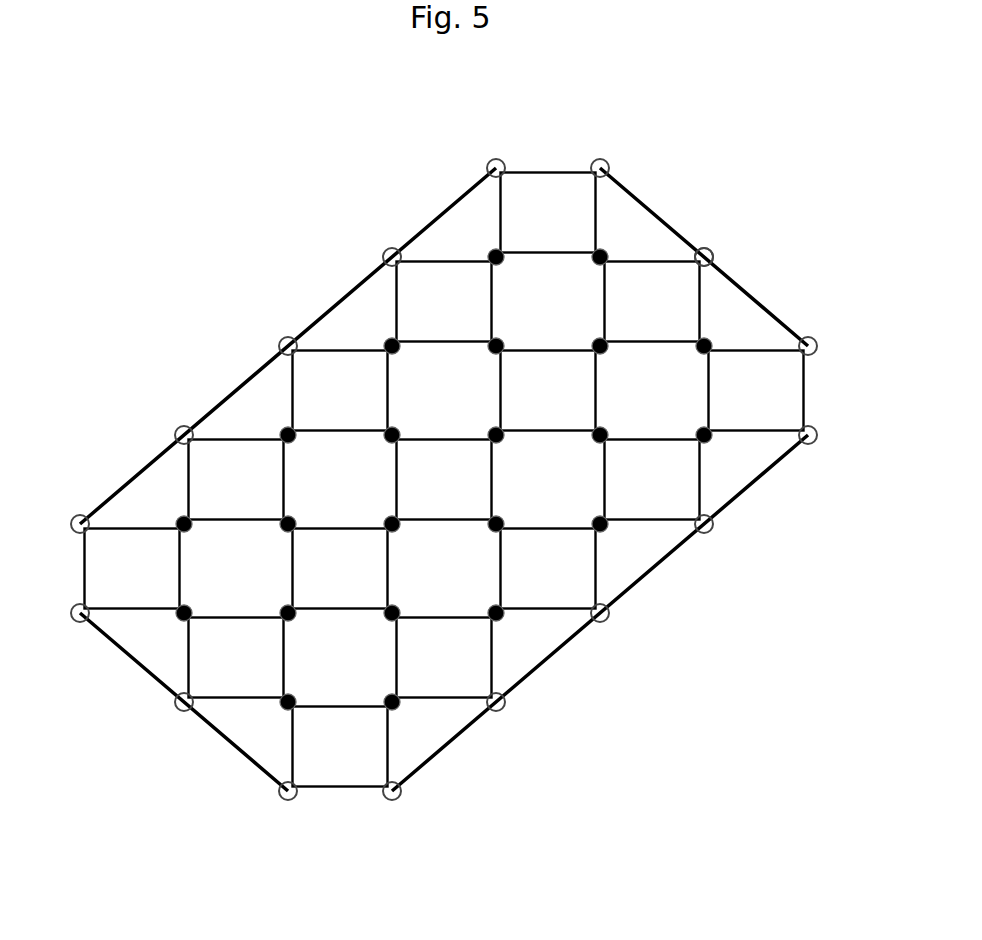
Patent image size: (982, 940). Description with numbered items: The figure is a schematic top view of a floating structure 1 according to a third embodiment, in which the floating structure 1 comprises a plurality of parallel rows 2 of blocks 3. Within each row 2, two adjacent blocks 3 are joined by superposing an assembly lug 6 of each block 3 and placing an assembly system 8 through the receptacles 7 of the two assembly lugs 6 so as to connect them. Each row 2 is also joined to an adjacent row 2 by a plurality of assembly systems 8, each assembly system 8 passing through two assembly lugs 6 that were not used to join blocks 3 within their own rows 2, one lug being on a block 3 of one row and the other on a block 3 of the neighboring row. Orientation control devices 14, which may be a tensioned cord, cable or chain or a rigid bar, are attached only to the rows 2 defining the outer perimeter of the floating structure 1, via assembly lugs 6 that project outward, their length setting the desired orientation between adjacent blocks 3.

The floating structure 1 is at (265, 272).
The row 2 is at (613, 161).
The block 3 is at (432, 290).
The assembly lug 6 is at (180, 430).
The receptacle 7 is at (82, 609).
The assembly system 8 is at (492, 250).
The orientation control device 14 is at (237, 388).